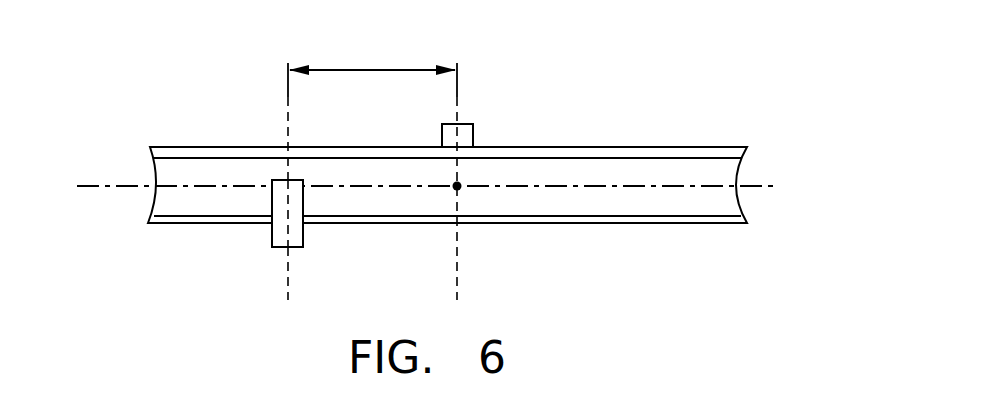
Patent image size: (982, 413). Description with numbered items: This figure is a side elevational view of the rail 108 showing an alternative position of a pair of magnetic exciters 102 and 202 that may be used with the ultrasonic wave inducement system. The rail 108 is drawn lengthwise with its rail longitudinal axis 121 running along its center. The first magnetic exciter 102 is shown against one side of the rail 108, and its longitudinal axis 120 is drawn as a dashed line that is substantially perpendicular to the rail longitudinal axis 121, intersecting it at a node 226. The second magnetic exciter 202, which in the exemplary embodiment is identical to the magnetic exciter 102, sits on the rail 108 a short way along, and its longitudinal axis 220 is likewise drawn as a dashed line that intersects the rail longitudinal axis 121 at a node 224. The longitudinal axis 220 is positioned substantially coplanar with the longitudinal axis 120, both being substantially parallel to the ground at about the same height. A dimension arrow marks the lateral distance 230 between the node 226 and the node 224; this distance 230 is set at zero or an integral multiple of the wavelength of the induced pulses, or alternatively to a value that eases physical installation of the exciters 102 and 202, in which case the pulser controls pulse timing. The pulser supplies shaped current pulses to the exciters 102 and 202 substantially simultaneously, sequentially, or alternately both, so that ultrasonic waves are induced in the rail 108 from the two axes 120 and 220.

The rail 108 is at (726, 113).
The rail longitudinal axis 121 is at (127, 185).
The longitudinal axis 120 is at (289, 271).
The longitudinal axis 220 is at (458, 271).
The lateral distance 230 is at (375, 67).
The magnetic exciter 102 is at (271, 235).
The node 226 is at (283, 180).
The second magnetic exciter 202 is at (473, 137).
The node 224 is at (457, 186).